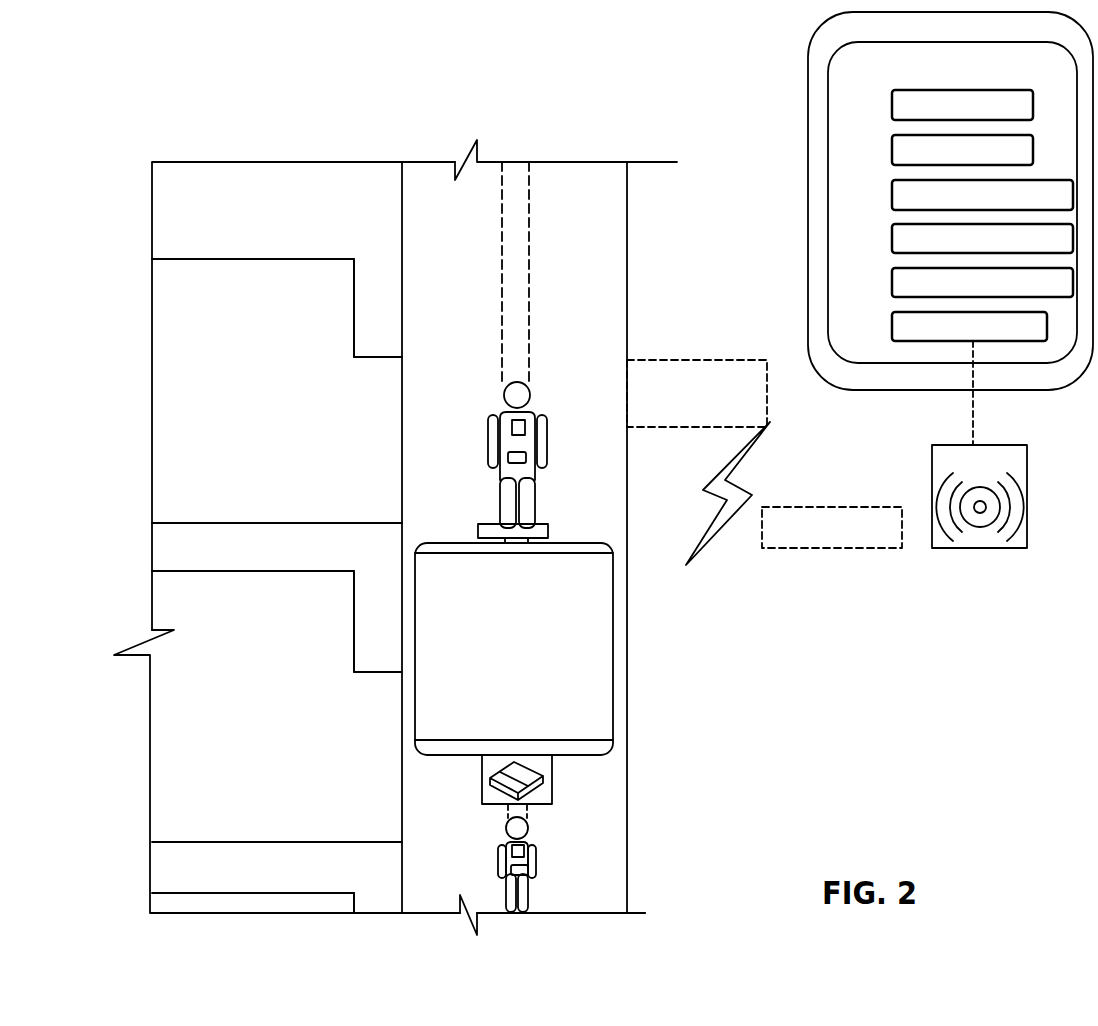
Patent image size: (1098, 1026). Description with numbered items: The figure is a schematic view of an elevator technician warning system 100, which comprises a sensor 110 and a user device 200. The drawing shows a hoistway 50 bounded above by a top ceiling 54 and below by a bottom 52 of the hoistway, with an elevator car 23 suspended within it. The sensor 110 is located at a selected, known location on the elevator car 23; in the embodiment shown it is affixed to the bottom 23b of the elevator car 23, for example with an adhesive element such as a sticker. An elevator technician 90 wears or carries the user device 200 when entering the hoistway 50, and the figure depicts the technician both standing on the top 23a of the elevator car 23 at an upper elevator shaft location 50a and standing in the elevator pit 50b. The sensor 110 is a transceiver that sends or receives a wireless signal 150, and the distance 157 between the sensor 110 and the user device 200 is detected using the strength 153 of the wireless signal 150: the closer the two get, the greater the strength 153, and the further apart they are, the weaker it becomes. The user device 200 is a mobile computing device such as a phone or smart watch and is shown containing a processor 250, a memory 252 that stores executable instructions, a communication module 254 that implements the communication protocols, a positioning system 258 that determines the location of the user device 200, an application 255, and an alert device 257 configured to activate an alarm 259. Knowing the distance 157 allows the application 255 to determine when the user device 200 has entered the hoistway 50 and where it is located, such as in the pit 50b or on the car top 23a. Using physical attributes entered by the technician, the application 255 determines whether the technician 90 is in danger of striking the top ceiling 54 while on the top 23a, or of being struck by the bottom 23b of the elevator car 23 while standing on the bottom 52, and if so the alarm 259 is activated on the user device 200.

The elevator technician warning system 100 is at (137, 122).
The top ceiling 54 is at (540, 162).
The hoistway 50 is at (465, 273).
The upper elevator shaft location 50a is at (381, 497).
The elevator pit 50b is at (408, 890).
The elevator car 23 is at (613, 677).
The top of the elevator car 23a is at (557, 547).
The bottom of the elevator car 23b is at (460, 740).
The user device 200 is at (820, 30).
The elevator technician 90 is at (508, 457).
The sensor 110 is at (490, 782).
The strength of the wireless signal 153 is at (727, 360).
The distance 157 is at (853, 502).
The wireless signal 150 is at (700, 553).
The bottom of the hoistway 52 is at (590, 902).
The memory 252 is at (892, 102).
The processor 250 is at (892, 147).
The communication module 254 is at (892, 191).
The application 255 is at (892, 235).
The positioning system 258 is at (892, 279).
The alert device 257 is at (892, 322).
The alarm 259 is at (935, 445).